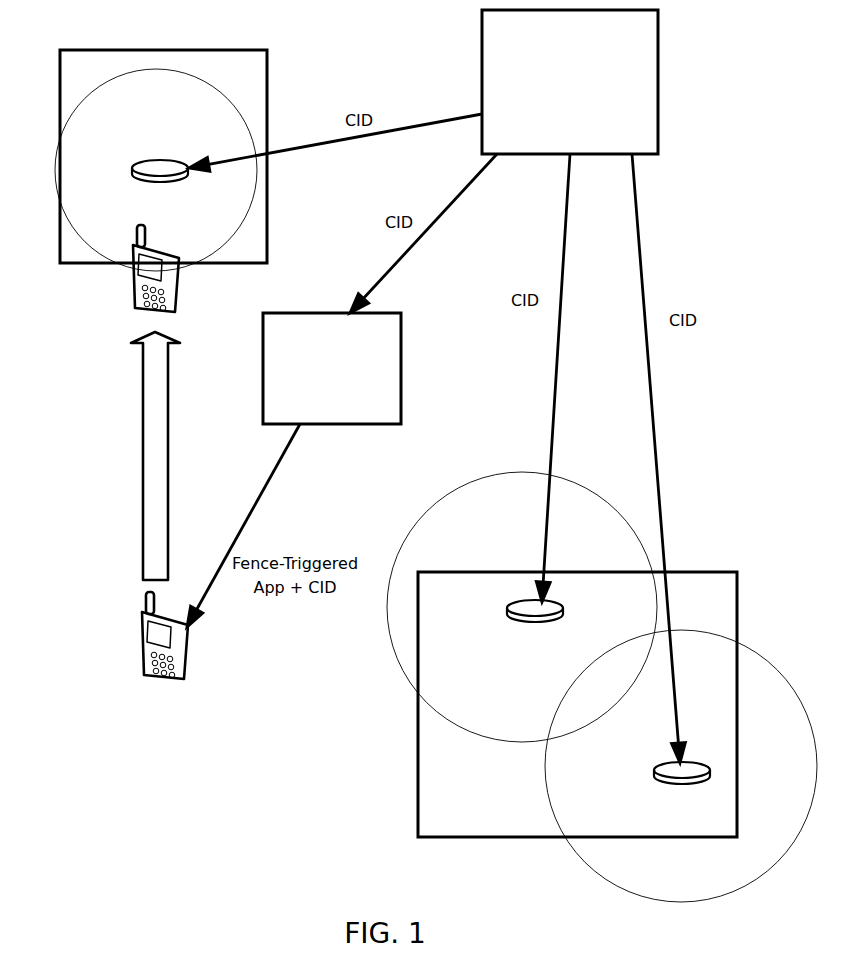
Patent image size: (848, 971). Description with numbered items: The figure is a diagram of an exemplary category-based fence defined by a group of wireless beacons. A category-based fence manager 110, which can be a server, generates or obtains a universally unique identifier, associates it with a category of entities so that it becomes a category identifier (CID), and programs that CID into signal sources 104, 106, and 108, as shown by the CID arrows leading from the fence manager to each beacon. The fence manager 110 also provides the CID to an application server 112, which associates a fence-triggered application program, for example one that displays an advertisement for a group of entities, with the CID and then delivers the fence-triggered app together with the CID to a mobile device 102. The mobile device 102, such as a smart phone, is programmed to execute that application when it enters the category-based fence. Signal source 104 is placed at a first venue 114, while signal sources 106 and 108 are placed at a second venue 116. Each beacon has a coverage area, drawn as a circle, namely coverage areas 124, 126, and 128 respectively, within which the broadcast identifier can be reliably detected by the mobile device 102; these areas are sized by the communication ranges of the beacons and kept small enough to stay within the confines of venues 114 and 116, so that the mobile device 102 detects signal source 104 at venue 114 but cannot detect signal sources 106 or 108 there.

The mobile device 102 is at (137, 292).
The signal source 104 is at (160, 158).
The signal source 106 is at (535, 612).
The signal source 108 is at (683, 765).
The category-based fence manager 110 is at (658, 97).
The application server 112 is at (401, 398).
The venue 114 is at (236, 50).
The venue 116 is at (418, 768).
The coverage area 124 is at (128, 75).
The coverage area 126 is at (500, 473).
The coverage area 128 is at (558, 835).